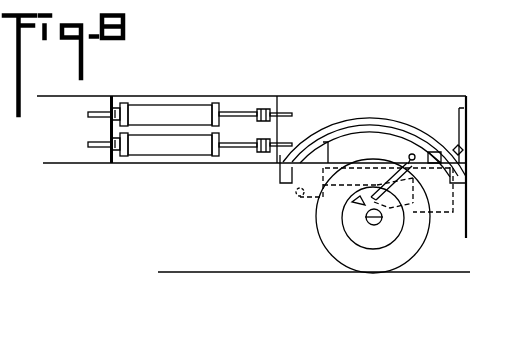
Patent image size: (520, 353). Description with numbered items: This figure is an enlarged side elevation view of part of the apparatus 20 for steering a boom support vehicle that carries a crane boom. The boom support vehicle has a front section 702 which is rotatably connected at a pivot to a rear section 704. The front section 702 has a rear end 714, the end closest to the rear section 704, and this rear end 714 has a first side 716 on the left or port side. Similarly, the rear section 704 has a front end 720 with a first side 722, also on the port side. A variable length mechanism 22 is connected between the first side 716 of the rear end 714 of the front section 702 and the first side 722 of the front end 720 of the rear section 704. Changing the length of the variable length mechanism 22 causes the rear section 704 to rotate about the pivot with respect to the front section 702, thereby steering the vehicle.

The apparatus for steering boom support vehicle 20 is at (212, 82).
The variable length mechanism 22 is at (155, 150).
The front section 702 is at (70, 120).
The rear section 704 is at (357, 114).
The rear end 714 is at (108, 160).
The first side 716 is at (110, 100).
The front end 720 is at (272, 153).
The first side 722 is at (280, 107).